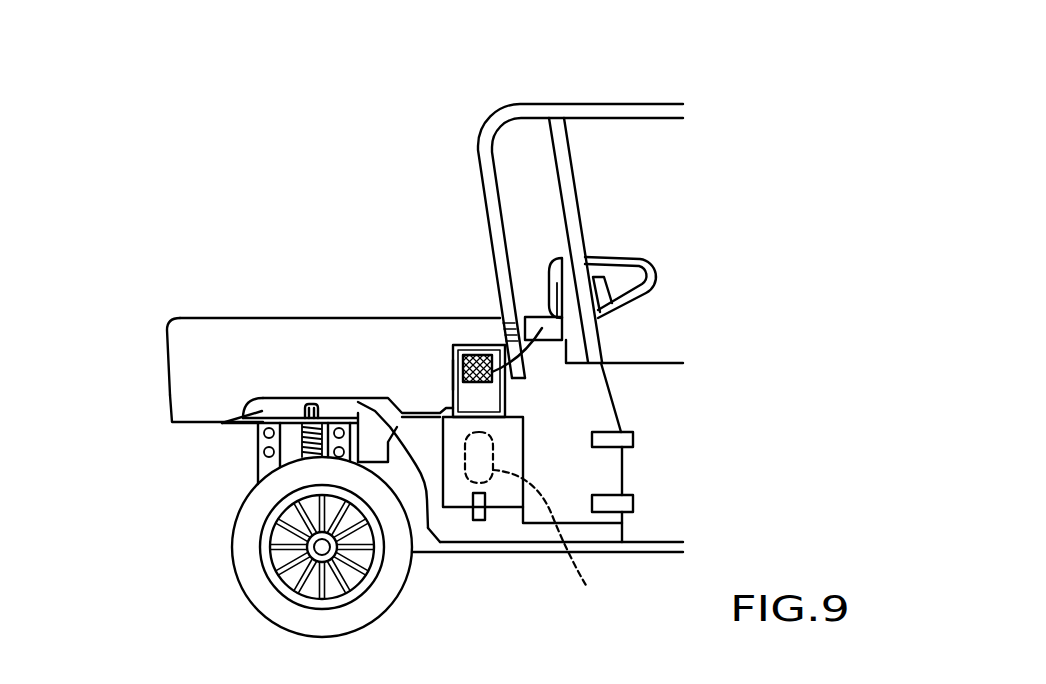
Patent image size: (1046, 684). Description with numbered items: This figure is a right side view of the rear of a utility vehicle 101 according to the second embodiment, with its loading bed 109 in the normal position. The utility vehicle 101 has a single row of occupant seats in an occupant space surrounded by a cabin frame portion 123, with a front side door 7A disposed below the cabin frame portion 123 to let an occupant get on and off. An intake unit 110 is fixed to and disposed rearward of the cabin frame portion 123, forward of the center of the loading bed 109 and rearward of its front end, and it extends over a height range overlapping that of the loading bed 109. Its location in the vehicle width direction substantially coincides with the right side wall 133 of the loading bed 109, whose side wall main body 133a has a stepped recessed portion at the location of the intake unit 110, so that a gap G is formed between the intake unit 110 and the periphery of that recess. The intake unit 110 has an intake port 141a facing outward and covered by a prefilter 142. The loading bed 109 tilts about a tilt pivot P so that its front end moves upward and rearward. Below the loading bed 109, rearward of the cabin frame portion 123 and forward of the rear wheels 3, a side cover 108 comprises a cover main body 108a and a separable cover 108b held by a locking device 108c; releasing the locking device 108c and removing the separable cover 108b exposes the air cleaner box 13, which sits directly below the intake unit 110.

The utility vehicle 101 is at (733, 98).
The cabin frame portion 123 is at (613, 107).
The loading bed 109 is at (159, 318).
The right side wall 133 is at (166, 352).
The side wall main body 133a is at (172, 402).
The tilt pivot P is at (235, 428).
The rear wheels 3 is at (245, 571).
The side cover 108 is at (483, 520).
The cover main body 108a is at (441, 527).
The separable cover 108b is at (462, 500).
The locking device 108c is at (517, 535).
The air cleaner box 13 is at (541, 525).
The front side door 7A is at (651, 525).
The intake unit 110 is at (468, 345).
The prefilter 142 is at (455, 361).
The gap G is at (453, 374).
The intake port 141a is at (531, 316).